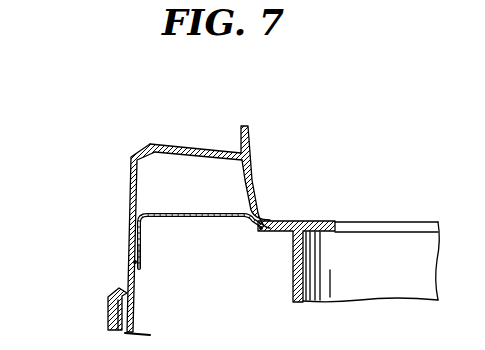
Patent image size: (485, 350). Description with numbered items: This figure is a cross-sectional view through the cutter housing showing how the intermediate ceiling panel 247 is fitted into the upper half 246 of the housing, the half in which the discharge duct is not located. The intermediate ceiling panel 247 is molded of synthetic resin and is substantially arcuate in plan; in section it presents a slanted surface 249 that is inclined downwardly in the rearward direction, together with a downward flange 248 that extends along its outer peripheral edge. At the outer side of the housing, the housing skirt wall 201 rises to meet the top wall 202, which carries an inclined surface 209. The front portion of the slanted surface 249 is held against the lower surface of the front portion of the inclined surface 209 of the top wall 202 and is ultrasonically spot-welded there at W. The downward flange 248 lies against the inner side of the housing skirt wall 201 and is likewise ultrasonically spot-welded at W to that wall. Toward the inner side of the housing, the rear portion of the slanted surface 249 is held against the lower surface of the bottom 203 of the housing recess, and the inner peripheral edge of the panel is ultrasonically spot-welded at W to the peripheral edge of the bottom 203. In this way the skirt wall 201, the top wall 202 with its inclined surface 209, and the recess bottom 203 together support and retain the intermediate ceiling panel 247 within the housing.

The housing skirt wall 201 is at (133, 190).
The top wall 202 is at (212, 145).
The bottom of the recess 203 is at (313, 220).
The inclined surface 209 is at (163, 145).
The upper half 246 is at (157, 173).
The intermediate ceiling panel 247 is at (221, 232).
The downward flange 248 is at (139, 245).
The slanted surface 249 is at (190, 212).
The ultrasonic spot weld W is at (134, 259).